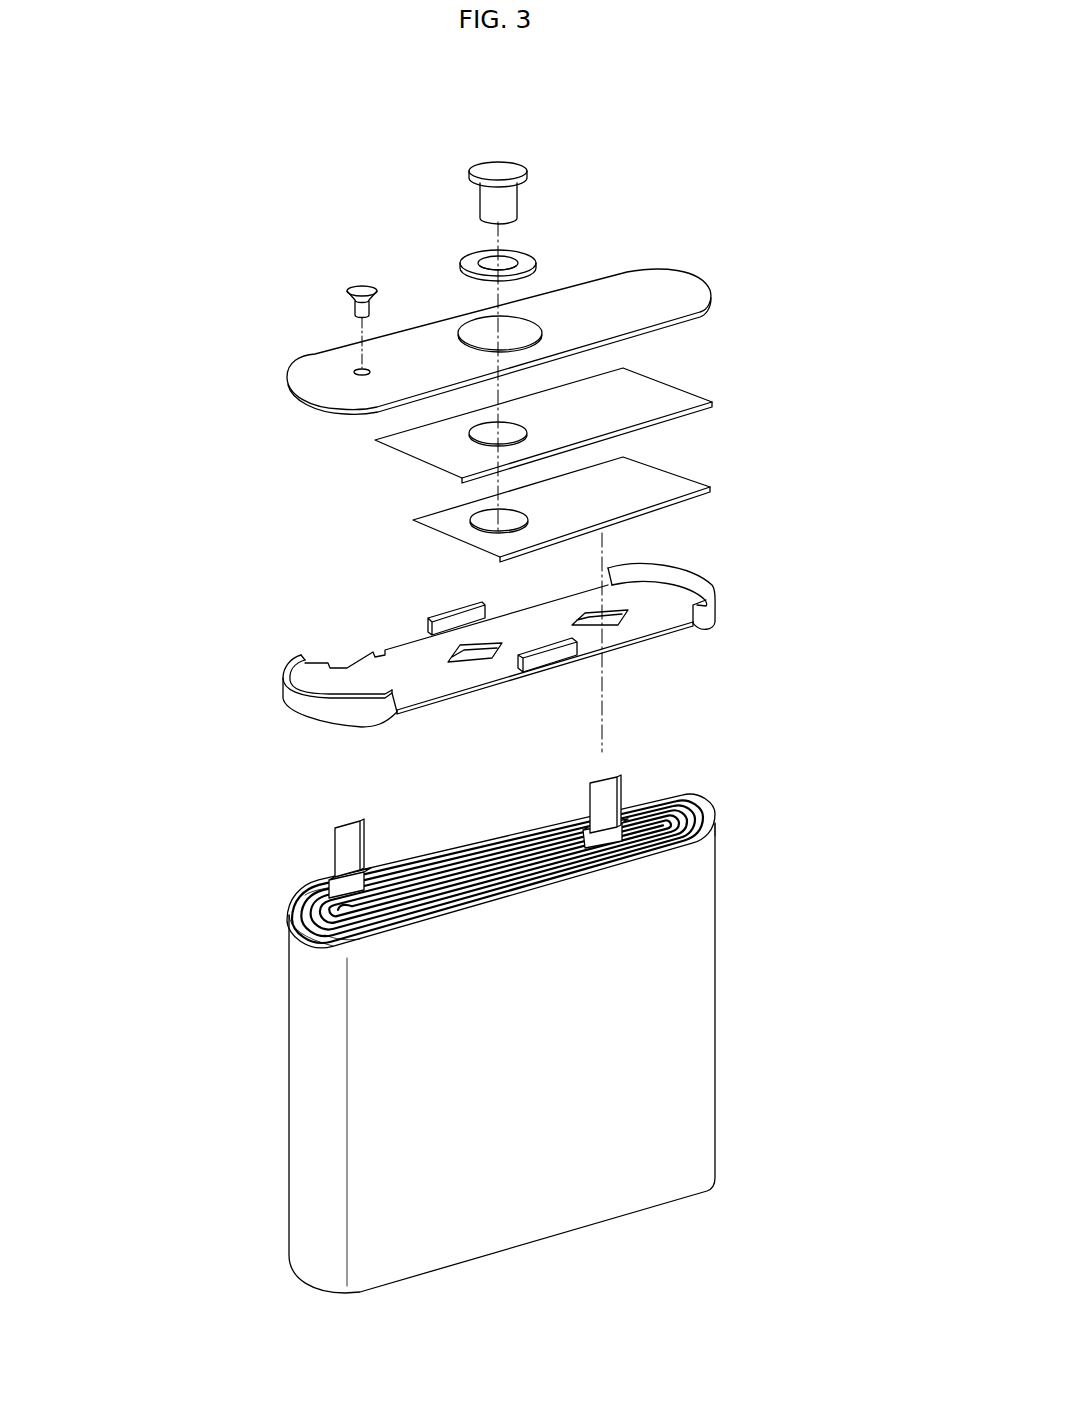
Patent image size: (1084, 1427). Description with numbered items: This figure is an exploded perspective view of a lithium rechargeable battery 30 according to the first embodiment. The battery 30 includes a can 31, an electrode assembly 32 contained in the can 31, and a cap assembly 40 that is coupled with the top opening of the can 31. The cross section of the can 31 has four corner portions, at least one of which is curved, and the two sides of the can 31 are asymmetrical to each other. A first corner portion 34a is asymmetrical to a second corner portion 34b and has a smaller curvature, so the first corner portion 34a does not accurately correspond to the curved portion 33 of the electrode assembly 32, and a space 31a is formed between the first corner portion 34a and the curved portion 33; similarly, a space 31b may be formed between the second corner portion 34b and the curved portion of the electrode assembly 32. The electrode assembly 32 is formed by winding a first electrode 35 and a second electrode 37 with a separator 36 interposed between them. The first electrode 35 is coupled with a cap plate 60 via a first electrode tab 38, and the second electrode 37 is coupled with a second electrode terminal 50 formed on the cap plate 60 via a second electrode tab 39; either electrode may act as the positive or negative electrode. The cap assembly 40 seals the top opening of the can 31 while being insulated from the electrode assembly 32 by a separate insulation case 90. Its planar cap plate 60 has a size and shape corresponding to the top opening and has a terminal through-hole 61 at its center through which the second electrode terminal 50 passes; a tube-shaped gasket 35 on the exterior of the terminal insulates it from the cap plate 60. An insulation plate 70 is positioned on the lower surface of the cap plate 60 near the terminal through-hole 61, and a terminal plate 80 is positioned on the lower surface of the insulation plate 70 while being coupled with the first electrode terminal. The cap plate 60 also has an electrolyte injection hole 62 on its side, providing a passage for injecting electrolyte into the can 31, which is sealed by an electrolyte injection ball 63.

The lithium rechargeable battery 30 is at (537, 998).
The can 31 is at (514, 1053).
The space 31a is at (343, 935).
The space 31b is at (717, 824).
The electrode assembly 32 is at (465, 842).
The curved portion 33 is at (440, 843).
The first corner portion 34a is at (330, 932).
The second corner portion 34b is at (305, 898).
The first electrode 35 is at (470, 257).
The separator 36 is at (677, 808).
The second electrode 37 is at (655, 820).
The first electrode tab 38 is at (585, 800).
The second electrode tab 39 is at (350, 842).
The cap assembly 40 is at (203, 242).
The second electrode terminal 50 is at (490, 167).
The cap plate 60 is at (450, 338).
The terminal through-hole 61 is at (483, 330).
The electrolyte injection hole 62 is at (358, 370).
The electrolyte injection ball 63 is at (361, 287).
The insulation plate 70 is at (413, 442).
The terminal plate 80 is at (450, 517).
The insulation case 90 is at (363, 643).